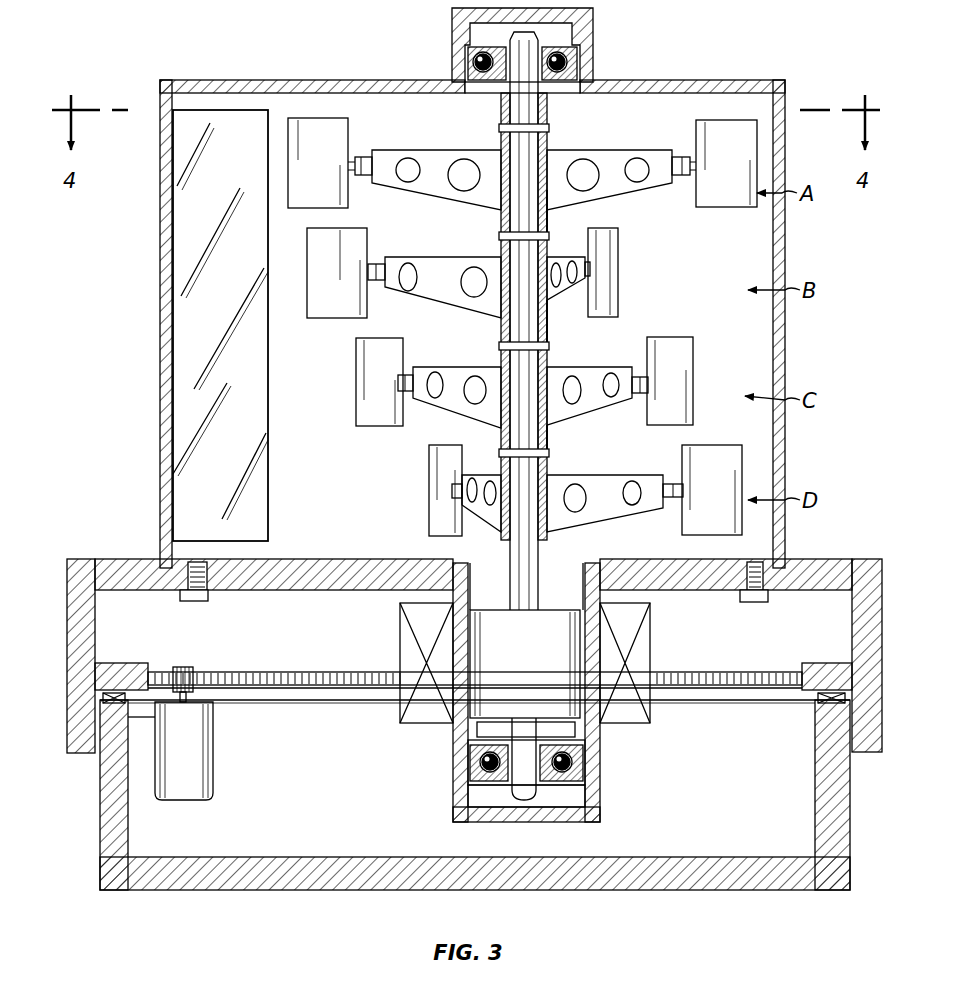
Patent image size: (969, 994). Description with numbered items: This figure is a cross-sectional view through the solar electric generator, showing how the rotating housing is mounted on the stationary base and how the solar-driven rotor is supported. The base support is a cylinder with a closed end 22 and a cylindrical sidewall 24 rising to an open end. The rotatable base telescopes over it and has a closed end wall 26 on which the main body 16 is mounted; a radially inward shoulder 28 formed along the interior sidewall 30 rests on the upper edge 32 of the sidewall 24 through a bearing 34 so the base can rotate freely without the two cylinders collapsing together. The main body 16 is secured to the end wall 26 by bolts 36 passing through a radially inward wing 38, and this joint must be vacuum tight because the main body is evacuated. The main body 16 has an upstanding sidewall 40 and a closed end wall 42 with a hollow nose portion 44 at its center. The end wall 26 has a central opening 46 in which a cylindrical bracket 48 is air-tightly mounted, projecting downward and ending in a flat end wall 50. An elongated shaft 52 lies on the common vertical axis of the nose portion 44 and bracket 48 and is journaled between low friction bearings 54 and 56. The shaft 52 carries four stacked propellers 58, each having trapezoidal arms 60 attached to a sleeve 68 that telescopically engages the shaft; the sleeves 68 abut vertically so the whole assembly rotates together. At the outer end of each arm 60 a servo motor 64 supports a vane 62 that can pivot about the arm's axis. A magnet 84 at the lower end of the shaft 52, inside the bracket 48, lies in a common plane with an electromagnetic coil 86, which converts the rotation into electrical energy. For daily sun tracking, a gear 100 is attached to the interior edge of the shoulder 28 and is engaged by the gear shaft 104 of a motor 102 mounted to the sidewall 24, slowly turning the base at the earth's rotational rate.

The main body 16 is at (160, 200).
The closed end 22 is at (720, 890).
The cylindrical sidewall 24 is at (100, 833).
The closed end wall 26 is at (308, 590).
The shoulder 28 is at (748, 663).
The sidewall 30 is at (67, 559).
The upper edge 32 is at (827, 700).
The bearing 34 is at (802, 705).
The bolts 36 is at (207, 601).
The wing 38 is at (188, 560).
The sidewall 40 is at (160, 385).
The closed end wall 42 is at (377, 80).
The nose portion 44 is at (593, 46).
The central opening 46 is at (490, 575).
The cylindrical bracket 48 is at (452, 766).
The flat end wall 50 is at (703, 412).
The shaft 52 is at (540, 162).
The bearing 54 is at (568, 62).
The bearing 56 is at (570, 762).
The propellers 58 is at (612, 198).
The arms 60 is at (470, 150).
The vane 62 is at (302, 208).
The servo motor 64 is at (362, 155).
The sleeve 68 is at (550, 202).
The magnet 84 is at (480, 709).
The electromagnetic coil 86 is at (400, 720).
The gear 100 is at (310, 690).
The motor 102 is at (213, 773).
The gear shaft 104 is at (183, 667).